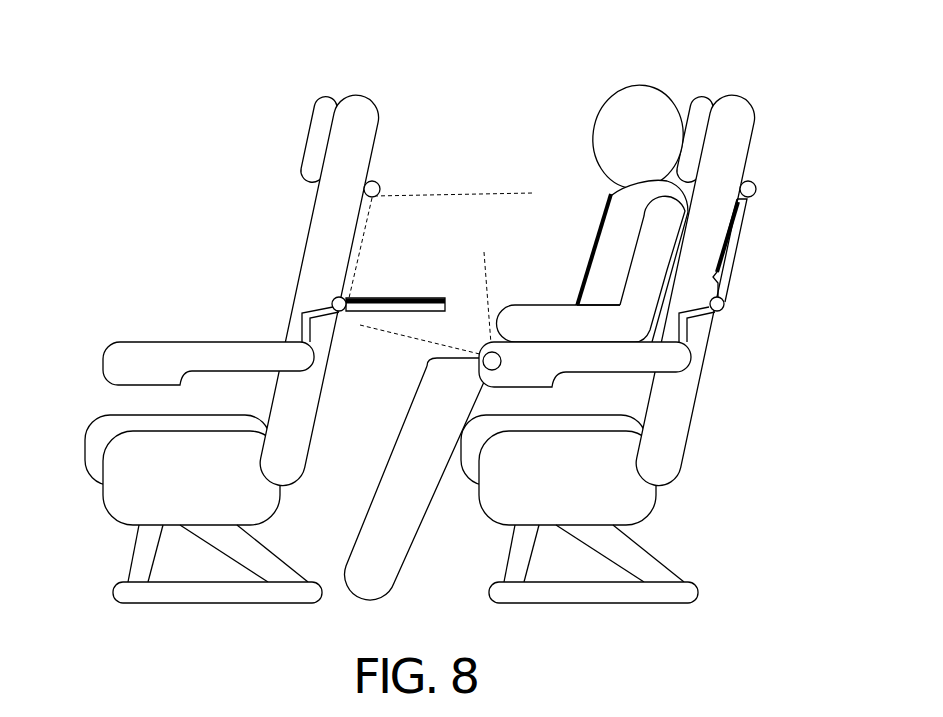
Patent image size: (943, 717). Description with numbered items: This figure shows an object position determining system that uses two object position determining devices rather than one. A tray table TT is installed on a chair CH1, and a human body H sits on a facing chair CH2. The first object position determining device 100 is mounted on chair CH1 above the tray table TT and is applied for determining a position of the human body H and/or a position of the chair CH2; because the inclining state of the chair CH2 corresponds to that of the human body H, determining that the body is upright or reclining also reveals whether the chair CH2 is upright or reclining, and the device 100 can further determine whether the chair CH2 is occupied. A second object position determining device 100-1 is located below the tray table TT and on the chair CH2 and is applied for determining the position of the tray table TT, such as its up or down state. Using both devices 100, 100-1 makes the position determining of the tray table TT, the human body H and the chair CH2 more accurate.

The chair CH1 is at (357, 97).
The chair CH2 is at (741, 103).
The human body H is at (644, 100).
The tray table TT is at (393, 308).
The object position determining device 100 is at (380, 186).
The object position determining device 100-1 is at (490, 364).